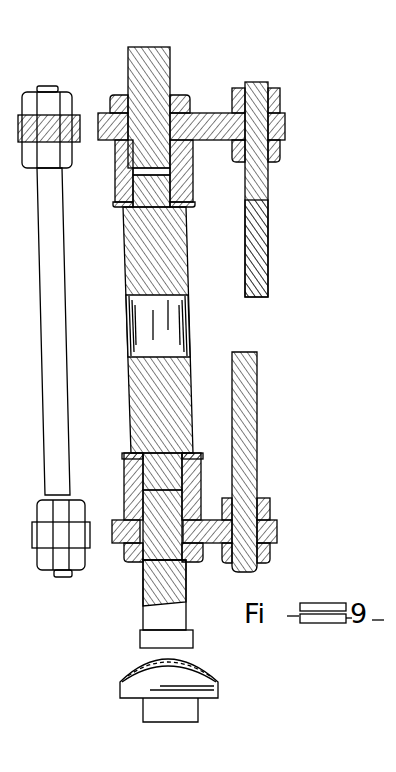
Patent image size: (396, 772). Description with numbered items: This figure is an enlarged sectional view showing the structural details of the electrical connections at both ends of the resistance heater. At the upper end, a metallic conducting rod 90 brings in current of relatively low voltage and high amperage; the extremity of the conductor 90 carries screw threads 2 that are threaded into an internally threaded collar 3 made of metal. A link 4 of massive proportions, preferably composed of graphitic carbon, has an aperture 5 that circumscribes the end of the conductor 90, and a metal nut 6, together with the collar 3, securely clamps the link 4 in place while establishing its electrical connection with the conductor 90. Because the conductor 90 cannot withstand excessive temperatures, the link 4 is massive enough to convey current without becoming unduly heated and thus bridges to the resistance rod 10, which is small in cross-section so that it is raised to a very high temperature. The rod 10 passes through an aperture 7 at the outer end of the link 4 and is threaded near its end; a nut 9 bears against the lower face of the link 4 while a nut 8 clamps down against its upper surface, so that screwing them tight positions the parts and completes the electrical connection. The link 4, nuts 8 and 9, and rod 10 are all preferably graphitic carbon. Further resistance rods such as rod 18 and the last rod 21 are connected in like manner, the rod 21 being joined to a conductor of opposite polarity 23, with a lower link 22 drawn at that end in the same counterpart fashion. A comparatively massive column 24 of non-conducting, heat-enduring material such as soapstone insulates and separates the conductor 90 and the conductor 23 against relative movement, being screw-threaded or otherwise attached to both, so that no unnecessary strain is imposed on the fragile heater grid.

The metallic conducting rod 90 is at (148, 54).
The resistance rod 18 is at (46, 88).
The screw threads 2 is at (172, 95).
The nut 6 is at (188, 104).
The aperture 5 is at (110, 113).
The link 4 is at (214, 120).
The aperture 7 is at (282, 119).
The nut 8 is at (279, 92).
The nut 9 is at (280, 156).
The resistance rod 10 is at (269, 250).
The internally threaded collar 3 is at (191, 181).
The column 24 is at (160, 206).
The resistance rod 21 is at (233, 393).
The lower plate 22 is at (213, 544).
The conductor of opposite polarity 23 is at (140, 603).